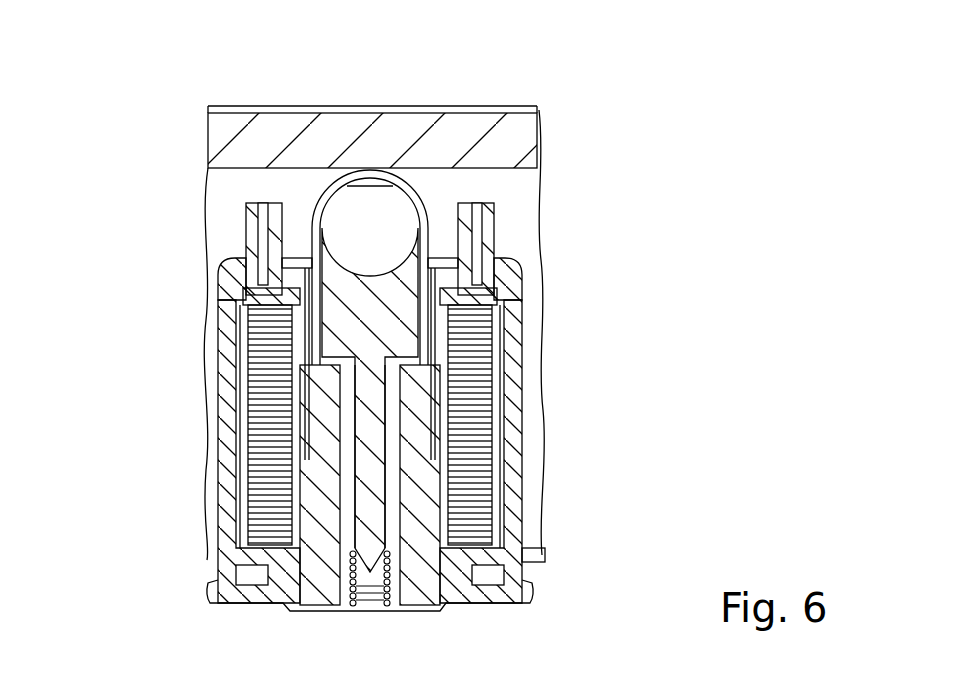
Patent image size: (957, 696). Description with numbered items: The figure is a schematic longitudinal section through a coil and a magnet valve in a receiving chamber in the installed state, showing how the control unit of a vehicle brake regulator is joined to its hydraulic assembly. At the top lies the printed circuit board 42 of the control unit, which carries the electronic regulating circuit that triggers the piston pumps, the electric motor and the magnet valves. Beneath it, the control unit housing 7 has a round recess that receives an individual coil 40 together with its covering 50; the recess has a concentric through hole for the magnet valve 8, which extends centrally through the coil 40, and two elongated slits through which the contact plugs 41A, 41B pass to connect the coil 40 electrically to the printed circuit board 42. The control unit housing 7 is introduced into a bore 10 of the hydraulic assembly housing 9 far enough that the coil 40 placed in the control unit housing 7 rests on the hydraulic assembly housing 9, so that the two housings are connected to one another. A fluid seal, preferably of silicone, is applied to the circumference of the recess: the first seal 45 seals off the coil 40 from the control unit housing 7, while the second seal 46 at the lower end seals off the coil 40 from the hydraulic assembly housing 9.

The control unit housing 7 is at (305, 100).
The magnet valve 8 is at (372, 418).
The hydraulic assembly housing 9 is at (560, 430).
The bore 10 is at (366, 305).
The coil 40 is at (243, 340).
The contact plug 41A is at (246, 218).
The contact plug 41B is at (494, 213).
The printed circuit board 42 is at (441, 87).
The first seal 45 is at (512, 268).
The second seal 46 is at (525, 590).
The covering 50 is at (222, 537).